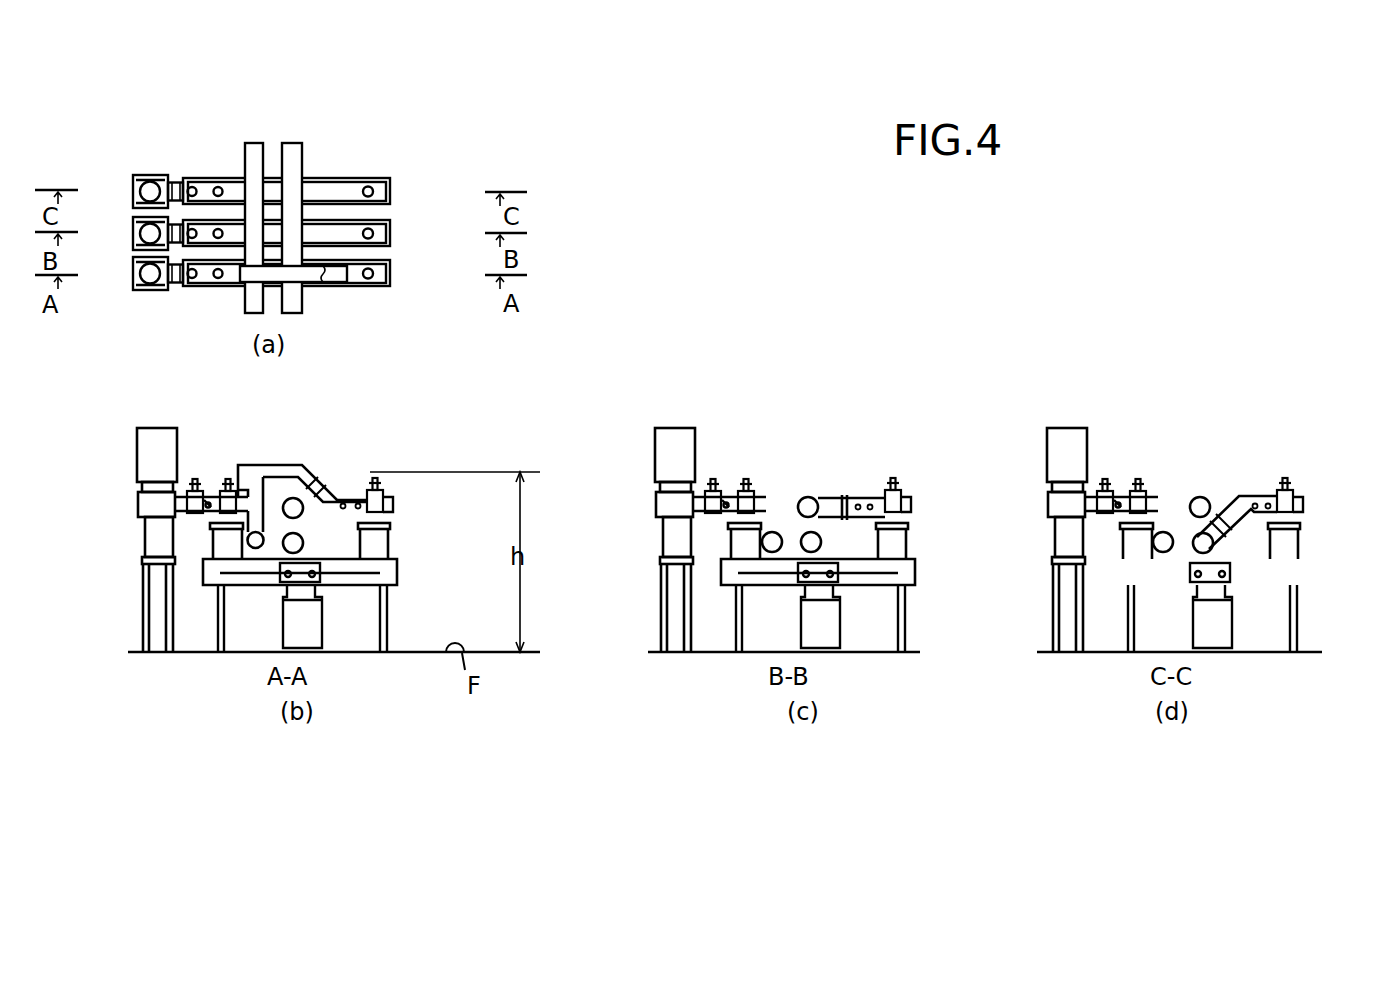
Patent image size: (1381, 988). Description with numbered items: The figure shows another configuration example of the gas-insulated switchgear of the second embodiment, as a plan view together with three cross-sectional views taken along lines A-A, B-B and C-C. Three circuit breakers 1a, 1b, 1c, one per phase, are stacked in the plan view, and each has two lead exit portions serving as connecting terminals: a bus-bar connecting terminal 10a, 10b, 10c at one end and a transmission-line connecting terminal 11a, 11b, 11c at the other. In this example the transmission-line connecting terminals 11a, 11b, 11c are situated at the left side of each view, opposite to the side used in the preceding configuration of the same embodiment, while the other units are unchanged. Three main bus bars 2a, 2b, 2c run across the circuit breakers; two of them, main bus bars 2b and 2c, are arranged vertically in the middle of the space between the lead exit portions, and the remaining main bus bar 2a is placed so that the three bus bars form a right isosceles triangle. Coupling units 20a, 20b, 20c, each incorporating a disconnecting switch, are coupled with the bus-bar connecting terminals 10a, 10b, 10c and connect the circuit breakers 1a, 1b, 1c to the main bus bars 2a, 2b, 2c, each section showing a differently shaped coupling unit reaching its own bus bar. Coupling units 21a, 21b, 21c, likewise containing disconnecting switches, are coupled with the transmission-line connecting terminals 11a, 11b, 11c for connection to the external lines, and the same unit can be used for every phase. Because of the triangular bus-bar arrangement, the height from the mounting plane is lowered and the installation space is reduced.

The circuit breaker 1a is at (393, 284).
The circuit breaker 1b is at (393, 230).
The circuit breaker 1c is at (392, 187).
The main bus bar 2a is at (248, 157).
The main bus bar 2b is at (303, 158).
The main bus bar 2c is at (302, 547).
The bus-bar connecting terminal 10a is at (391, 543).
The bus-bar connecting terminal 10b is at (898, 548).
The bus-bar connecting terminal 10c is at (1292, 548).
The transmission-line connecting terminal 11a is at (210, 540).
The transmission-line connecting terminal 11b is at (727, 545).
The transmission-line connecting terminal 11c is at (1122, 553).
The coupling unit 20a is at (267, 463).
The coupling unit 20b is at (853, 497).
The coupling unit 20c is at (1240, 497).
The coupling unit 21a is at (131, 288).
The coupling unit 21b is at (134, 237).
The coupling unit 21c is at (133, 197).